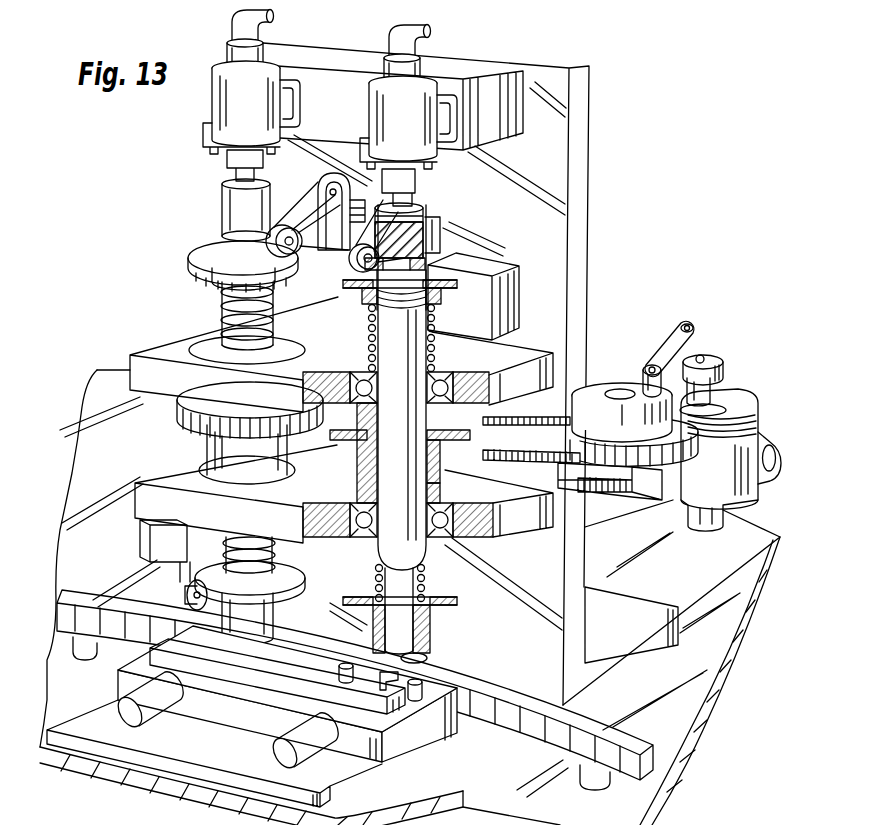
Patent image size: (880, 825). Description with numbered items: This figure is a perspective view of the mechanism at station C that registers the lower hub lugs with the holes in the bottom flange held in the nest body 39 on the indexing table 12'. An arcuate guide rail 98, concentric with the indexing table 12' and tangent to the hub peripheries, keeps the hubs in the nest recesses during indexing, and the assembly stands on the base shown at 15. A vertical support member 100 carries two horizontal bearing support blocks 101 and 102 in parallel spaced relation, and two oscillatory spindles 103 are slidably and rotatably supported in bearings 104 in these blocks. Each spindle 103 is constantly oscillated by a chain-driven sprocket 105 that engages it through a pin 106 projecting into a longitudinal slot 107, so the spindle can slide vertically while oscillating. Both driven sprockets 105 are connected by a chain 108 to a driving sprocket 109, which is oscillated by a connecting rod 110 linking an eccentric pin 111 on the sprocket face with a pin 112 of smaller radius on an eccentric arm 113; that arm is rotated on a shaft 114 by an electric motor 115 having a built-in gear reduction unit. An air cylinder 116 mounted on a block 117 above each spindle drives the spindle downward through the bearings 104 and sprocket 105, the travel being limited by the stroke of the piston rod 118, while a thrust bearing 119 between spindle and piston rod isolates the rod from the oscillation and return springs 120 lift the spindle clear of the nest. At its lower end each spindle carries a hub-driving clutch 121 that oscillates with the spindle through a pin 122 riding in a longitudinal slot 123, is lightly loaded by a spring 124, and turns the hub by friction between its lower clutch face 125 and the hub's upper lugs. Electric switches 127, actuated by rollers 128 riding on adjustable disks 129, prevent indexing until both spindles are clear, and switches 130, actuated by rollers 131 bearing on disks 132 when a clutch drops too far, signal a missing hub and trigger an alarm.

The indexing table 12' is at (264, 786).
The table 15 is at (550, 814).
The nest body 39 is at (433, 723).
The arcuate guide rail 98 is at (581, 717).
The vertical support member 100 is at (528, 236).
The bearing support block 101 is at (147, 353).
The bearing support block 102 is at (167, 477).
The oscillatory spindle 103 is at (222, 313).
The bearing 104 is at (290, 350).
The driven sprocket 105 is at (322, 440).
The pin 106 is at (445, 468).
The longitudinal slot 107 is at (437, 483).
The chain 108 is at (537, 420).
The driving sprocket 109 is at (675, 438).
The connecting rod 110 is at (670, 345).
The eccentric pin 111 is at (652, 363).
The pin 112 is at (687, 323).
The eccentric arm 113 is at (700, 356).
The shaft 114 is at (712, 392).
The electric motor 115 is at (740, 493).
The air cylinder 116 is at (378, 114).
The block 117 is at (470, 72).
The piston rod 118 is at (230, 176).
The thrust bearing 119 is at (232, 233).
The return spring 120 is at (367, 332).
The hub-driving clutch 121 is at (270, 613).
The pin 122 is at (427, 622).
The longitudinal slot 123 is at (422, 630).
The spring 124 is at (277, 558).
The lower clutch face 125 is at (427, 660).
The electric switch 127 is at (318, 188).
The roller 128 is at (297, 258).
The adjustable disk 129 is at (203, 252).
The switch 130 is at (152, 544).
The roller 131 is at (183, 597).
The disk 132 is at (292, 574).